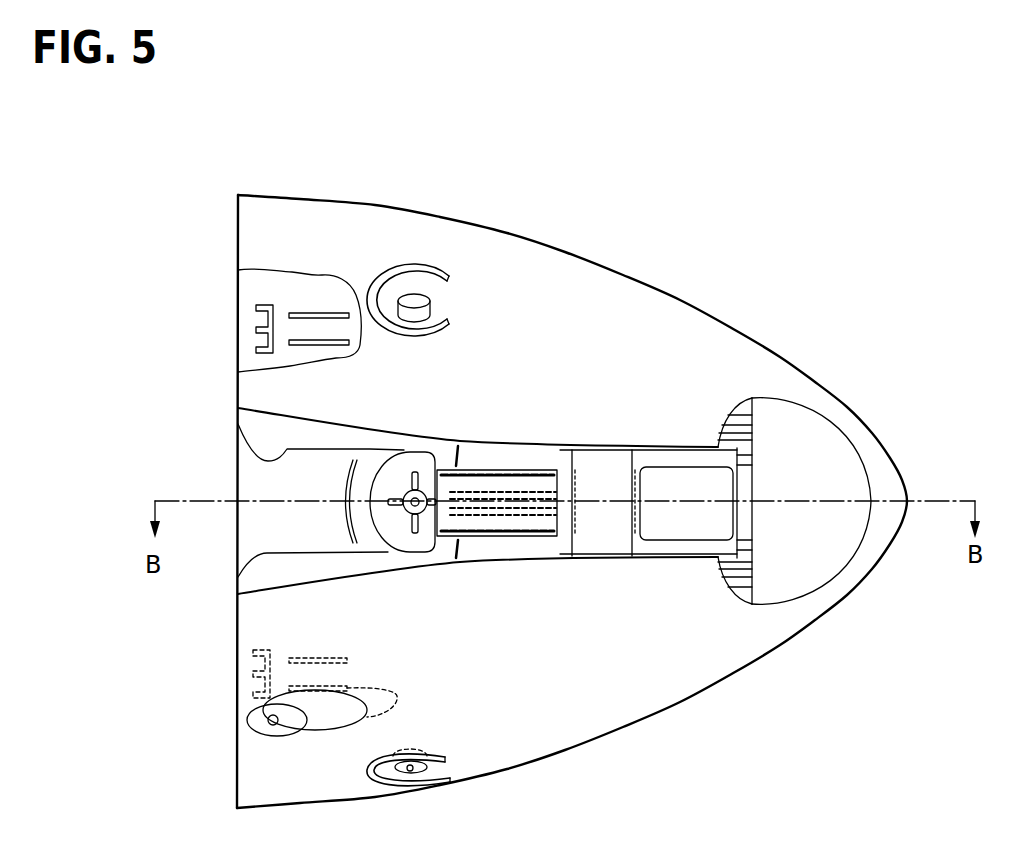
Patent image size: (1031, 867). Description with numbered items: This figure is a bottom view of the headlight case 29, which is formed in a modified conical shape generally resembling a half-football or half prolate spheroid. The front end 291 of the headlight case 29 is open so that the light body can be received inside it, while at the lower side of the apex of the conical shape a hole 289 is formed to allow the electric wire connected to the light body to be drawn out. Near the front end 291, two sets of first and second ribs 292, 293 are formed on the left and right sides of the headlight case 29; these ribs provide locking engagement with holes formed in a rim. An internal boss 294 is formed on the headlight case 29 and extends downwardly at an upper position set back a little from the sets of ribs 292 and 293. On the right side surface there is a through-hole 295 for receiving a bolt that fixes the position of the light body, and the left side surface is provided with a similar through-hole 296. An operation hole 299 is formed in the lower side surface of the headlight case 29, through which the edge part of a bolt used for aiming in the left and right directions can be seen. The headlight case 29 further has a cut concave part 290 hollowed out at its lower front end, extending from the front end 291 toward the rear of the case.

The headlight case 29 is at (623, 275).
The hole 289 is at (820, 420).
The cut concave part 290 is at (266, 462).
The front end 291 is at (237, 229).
The first rib 292 is at (256, 316).
The second rib 293 is at (308, 313).
The internal boss 294 is at (407, 522).
The through-hole 295 is at (410, 772).
The through-hole 296 is at (413, 295).
The operation hole 299 is at (275, 722).